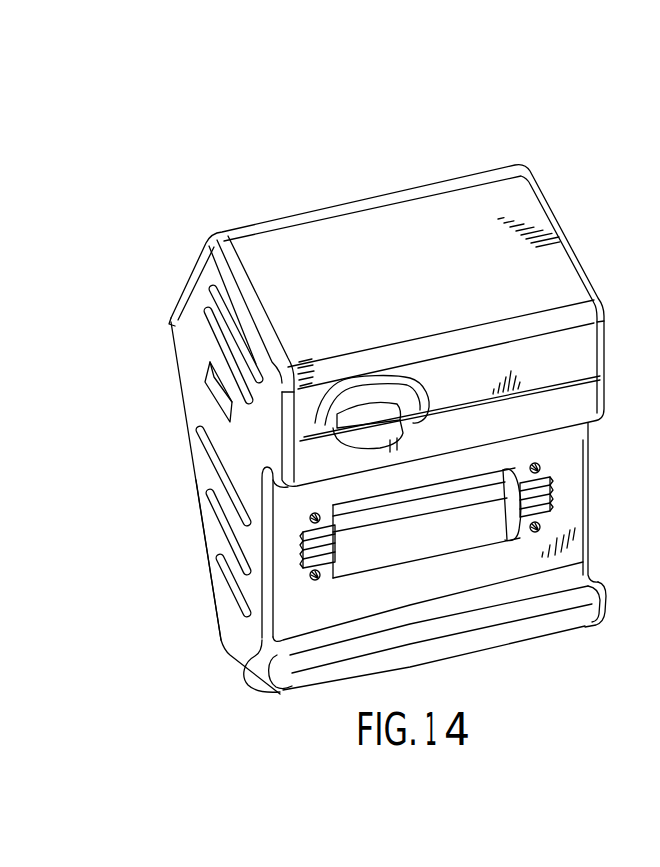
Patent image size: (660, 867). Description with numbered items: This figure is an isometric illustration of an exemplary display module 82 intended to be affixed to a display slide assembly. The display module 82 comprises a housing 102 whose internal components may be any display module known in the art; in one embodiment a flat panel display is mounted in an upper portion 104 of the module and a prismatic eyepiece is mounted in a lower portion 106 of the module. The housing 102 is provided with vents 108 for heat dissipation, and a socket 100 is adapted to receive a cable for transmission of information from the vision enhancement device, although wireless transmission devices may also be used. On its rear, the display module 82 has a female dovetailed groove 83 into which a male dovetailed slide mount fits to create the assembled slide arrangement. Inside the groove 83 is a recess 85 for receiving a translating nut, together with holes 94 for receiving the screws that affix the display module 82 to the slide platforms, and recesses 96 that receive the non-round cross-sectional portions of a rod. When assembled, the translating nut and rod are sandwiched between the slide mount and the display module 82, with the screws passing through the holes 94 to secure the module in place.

The display module 82 is at (370, 417).
The female dovetailed groove 83 is at (272, 641).
The recess 85 is at (400, 553).
The holes 94 is at (315, 512).
The recesses 96 is at (303, 548).
The socket 100 is at (380, 415).
The housing 102 is at (498, 155).
The upper portion 104 is at (199, 447).
The lower portion 106 is at (180, 555).
The vents 108 is at (210, 323).